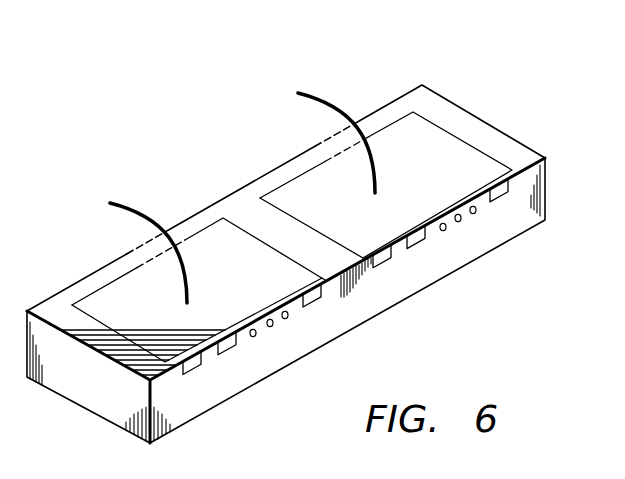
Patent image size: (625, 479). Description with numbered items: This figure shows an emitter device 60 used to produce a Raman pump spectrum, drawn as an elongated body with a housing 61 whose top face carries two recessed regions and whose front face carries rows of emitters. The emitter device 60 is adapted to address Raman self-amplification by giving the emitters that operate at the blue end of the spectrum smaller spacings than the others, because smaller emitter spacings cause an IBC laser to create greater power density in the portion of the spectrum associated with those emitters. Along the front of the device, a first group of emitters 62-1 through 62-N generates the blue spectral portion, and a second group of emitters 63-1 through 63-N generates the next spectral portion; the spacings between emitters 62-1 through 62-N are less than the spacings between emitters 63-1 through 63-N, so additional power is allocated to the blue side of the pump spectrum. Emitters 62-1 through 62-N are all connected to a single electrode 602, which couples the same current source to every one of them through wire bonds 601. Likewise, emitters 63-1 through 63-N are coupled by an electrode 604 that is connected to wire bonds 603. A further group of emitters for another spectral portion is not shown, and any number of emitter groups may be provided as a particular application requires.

The emitter device 60 is at (201, 158).
The housing 61 is at (474, 125).
The wire bonds 601 is at (130, 205).
The electrode 602 is at (100, 297).
The wire bonds 603 is at (318, 97).
The electrode 604 is at (290, 187).
The emitter 62-1 is at (200, 364).
The emitter 62-N is at (316, 298).
The emitter 63-1 is at (388, 264).
The emitter 63-N is at (505, 194).